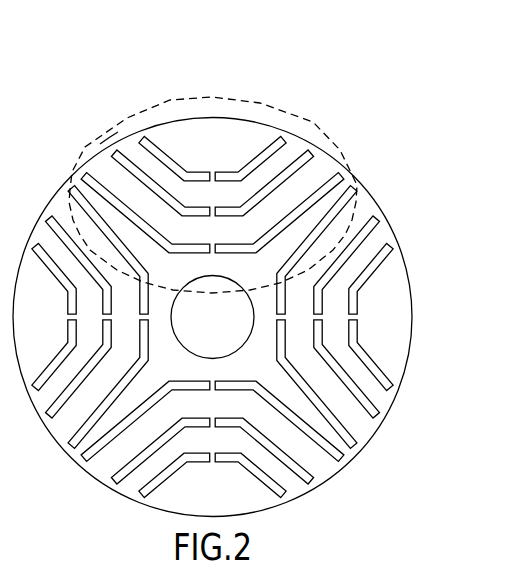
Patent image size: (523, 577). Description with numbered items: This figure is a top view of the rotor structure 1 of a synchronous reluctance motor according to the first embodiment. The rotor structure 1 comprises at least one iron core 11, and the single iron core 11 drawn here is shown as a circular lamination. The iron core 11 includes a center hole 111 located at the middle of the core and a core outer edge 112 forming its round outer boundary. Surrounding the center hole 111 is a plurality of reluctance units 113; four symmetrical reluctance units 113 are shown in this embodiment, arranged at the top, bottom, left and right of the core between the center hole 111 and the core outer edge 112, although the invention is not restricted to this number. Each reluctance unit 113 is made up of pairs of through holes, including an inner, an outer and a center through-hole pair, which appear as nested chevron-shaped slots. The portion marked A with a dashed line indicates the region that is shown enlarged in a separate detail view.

The rotor structure 1 is at (236, 284).
The iron core 11 is at (236, 289).
The center hole 111 is at (251, 308).
The core outer edge 112 is at (212, 117).
The reluctance unit 113 is at (108, 144).
The region A is at (150, 107).